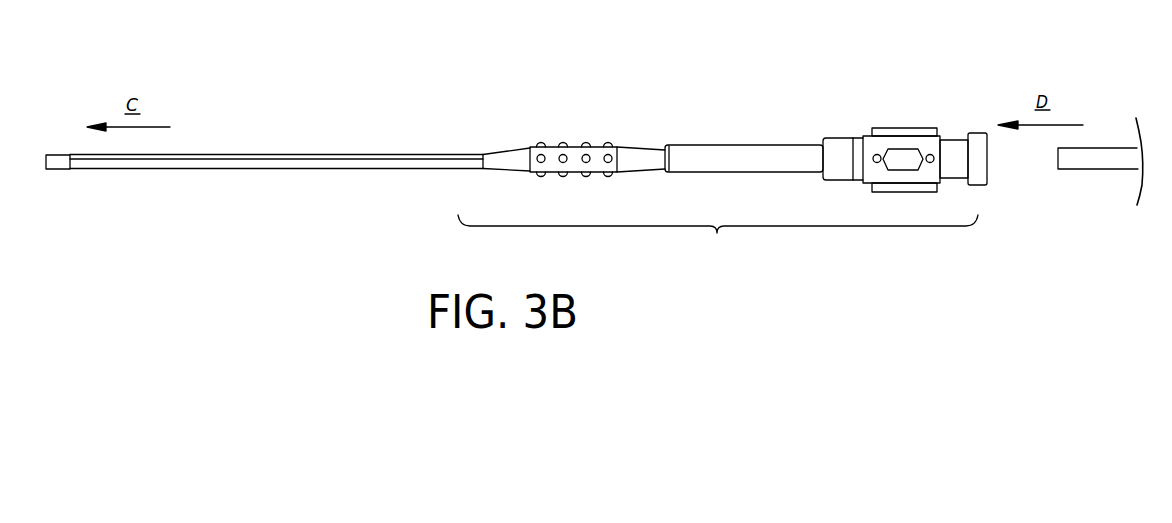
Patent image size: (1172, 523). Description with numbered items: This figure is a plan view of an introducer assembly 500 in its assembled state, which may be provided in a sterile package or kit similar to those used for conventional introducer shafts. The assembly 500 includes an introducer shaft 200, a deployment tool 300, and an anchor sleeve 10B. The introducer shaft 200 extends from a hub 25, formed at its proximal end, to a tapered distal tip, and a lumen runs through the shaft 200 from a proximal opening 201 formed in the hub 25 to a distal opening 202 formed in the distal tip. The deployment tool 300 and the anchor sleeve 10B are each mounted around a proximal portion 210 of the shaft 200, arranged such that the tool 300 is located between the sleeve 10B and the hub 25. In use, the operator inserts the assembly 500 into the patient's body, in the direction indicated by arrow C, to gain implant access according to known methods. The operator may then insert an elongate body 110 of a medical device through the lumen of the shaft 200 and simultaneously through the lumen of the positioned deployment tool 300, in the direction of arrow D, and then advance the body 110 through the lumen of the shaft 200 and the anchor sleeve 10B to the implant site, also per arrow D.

The introducer assembly 500 is at (278, 70).
The distal opening 202 is at (45, 160).
The introducer shaft 200 is at (327, 138).
The anchor sleeve 10B is at (575, 128).
The deployment tool 300 is at (732, 133).
The hub 25 is at (898, 112).
The proximal opening 201 is at (987, 165).
The elongate body 110 is at (1070, 170).
The proximal portion 210 is at (718, 241).